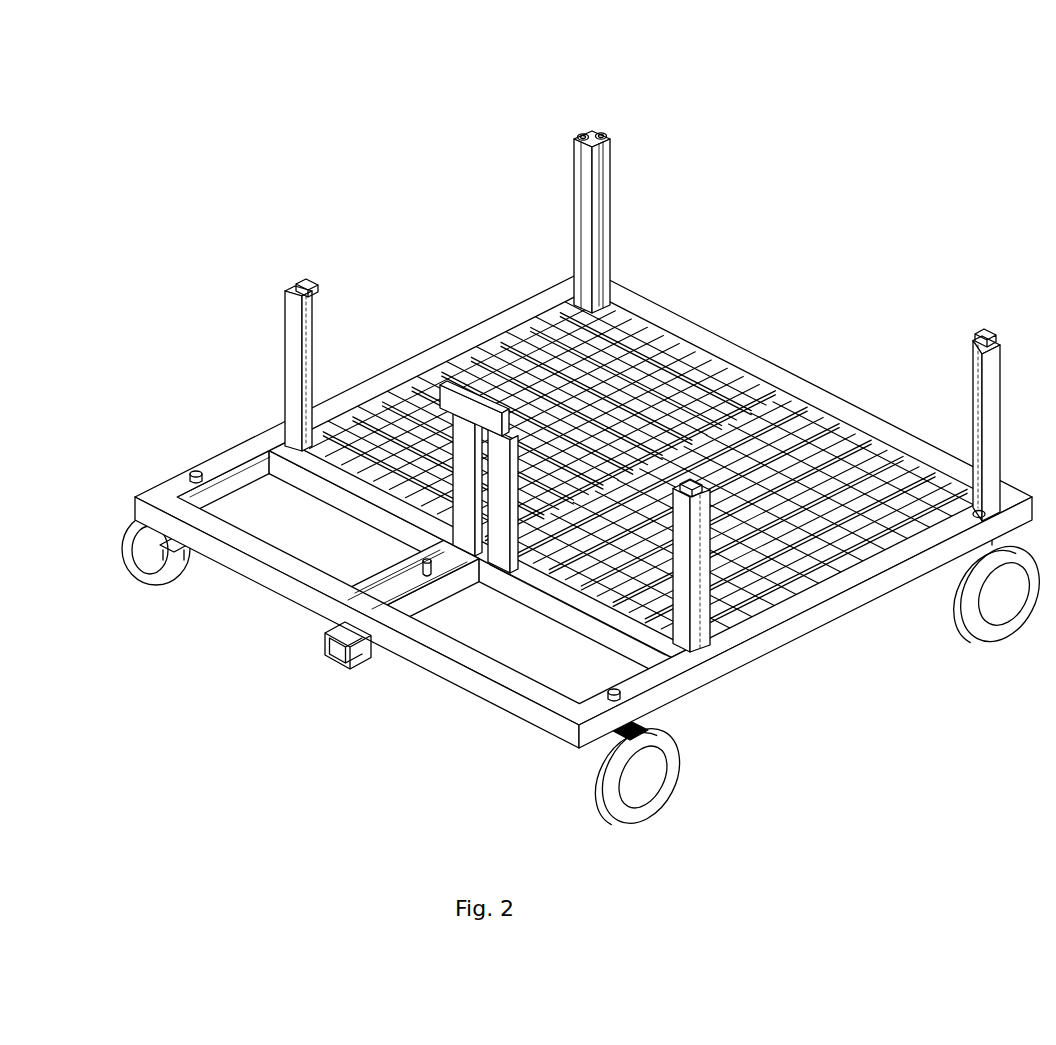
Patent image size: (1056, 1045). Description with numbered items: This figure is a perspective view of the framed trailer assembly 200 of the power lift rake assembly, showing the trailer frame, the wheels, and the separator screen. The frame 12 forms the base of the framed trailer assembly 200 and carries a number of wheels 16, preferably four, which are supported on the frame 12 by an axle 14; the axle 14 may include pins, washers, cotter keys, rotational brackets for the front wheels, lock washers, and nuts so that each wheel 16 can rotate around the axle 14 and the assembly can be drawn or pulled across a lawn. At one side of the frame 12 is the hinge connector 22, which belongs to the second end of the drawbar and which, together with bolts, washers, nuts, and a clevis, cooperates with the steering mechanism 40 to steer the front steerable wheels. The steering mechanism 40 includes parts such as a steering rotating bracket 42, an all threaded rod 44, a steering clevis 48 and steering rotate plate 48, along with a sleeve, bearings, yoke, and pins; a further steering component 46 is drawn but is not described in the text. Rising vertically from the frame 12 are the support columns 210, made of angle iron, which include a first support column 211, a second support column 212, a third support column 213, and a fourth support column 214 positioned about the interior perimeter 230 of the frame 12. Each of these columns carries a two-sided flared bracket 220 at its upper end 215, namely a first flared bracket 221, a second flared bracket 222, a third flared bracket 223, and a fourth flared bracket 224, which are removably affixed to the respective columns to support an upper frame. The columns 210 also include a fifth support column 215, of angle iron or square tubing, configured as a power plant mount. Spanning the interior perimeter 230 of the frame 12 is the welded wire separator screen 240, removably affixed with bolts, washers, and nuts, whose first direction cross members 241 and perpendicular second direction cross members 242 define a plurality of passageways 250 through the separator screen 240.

The framed trailer assembly 200 is at (838, 116).
The frame 12 is at (730, 635).
The axle 14 is at (167, 544).
The wheels 16 is at (166, 570).
The hinge connector 22 is at (370, 686).
The steering mechanism 40 is at (445, 672).
The steering rotating bracket 42 is at (205, 498).
The all threaded rod 44 is at (322, 562).
The slide element 46 is at (437, 617).
The steering clevis 48 is at (448, 612).
The support columns 210 is at (580, 391).
The first support column 211 is at (620, 222).
The second support column 212 is at (990, 377).
The third support column 213 is at (703, 523).
The fourth support column 214 is at (297, 303).
The fifth support column 215 is at (512, 425).
The flared brackets 220 is at (657, 297).
The first flared bracket 221 is at (618, 131).
The second flared bracket 222 is at (977, 326).
The third flared bracket 223 is at (705, 482).
The fourth flared bracket 224 is at (338, 271).
The interior perimeter 230 is at (583, 221).
The separator screen 240 is at (709, 350).
The first direction cross member 241 is at (640, 402).
The second direction cross member 242 is at (700, 366).
The passageways 250 is at (642, 455).